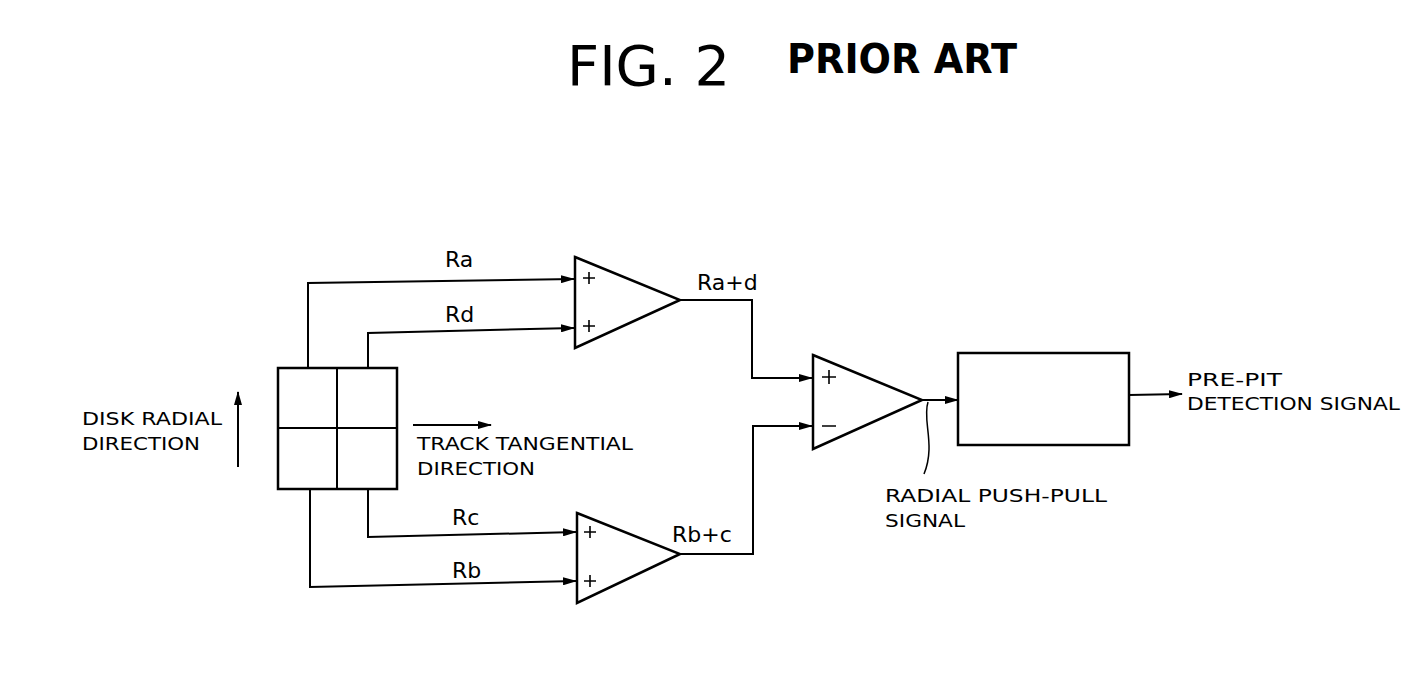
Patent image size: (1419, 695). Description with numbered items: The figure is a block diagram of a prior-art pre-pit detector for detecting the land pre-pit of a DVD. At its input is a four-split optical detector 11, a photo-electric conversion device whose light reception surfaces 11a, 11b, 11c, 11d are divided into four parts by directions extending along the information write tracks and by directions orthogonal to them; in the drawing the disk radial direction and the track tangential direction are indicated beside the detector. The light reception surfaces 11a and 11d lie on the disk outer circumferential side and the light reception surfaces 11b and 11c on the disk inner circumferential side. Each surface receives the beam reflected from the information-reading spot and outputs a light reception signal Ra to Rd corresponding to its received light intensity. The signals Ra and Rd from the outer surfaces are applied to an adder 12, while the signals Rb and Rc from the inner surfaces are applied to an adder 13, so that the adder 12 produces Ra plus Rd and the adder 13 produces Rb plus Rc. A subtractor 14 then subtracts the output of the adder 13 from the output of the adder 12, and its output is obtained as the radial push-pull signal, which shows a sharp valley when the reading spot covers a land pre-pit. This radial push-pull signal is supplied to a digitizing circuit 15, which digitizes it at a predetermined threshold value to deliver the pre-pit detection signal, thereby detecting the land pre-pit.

The four-split optical detector 11 is at (408, 402).
The light reception surface 11a is at (297, 368).
The light reception surface 11b is at (290, 489).
The light reception surface 11c is at (352, 489).
The light reception surface 11d is at (357, 368).
The adder 12 is at (650, 288).
The adder 13 is at (640, 577).
The subtractor 14 is at (885, 386).
The digitizing circuit 15 is at (1082, 352).